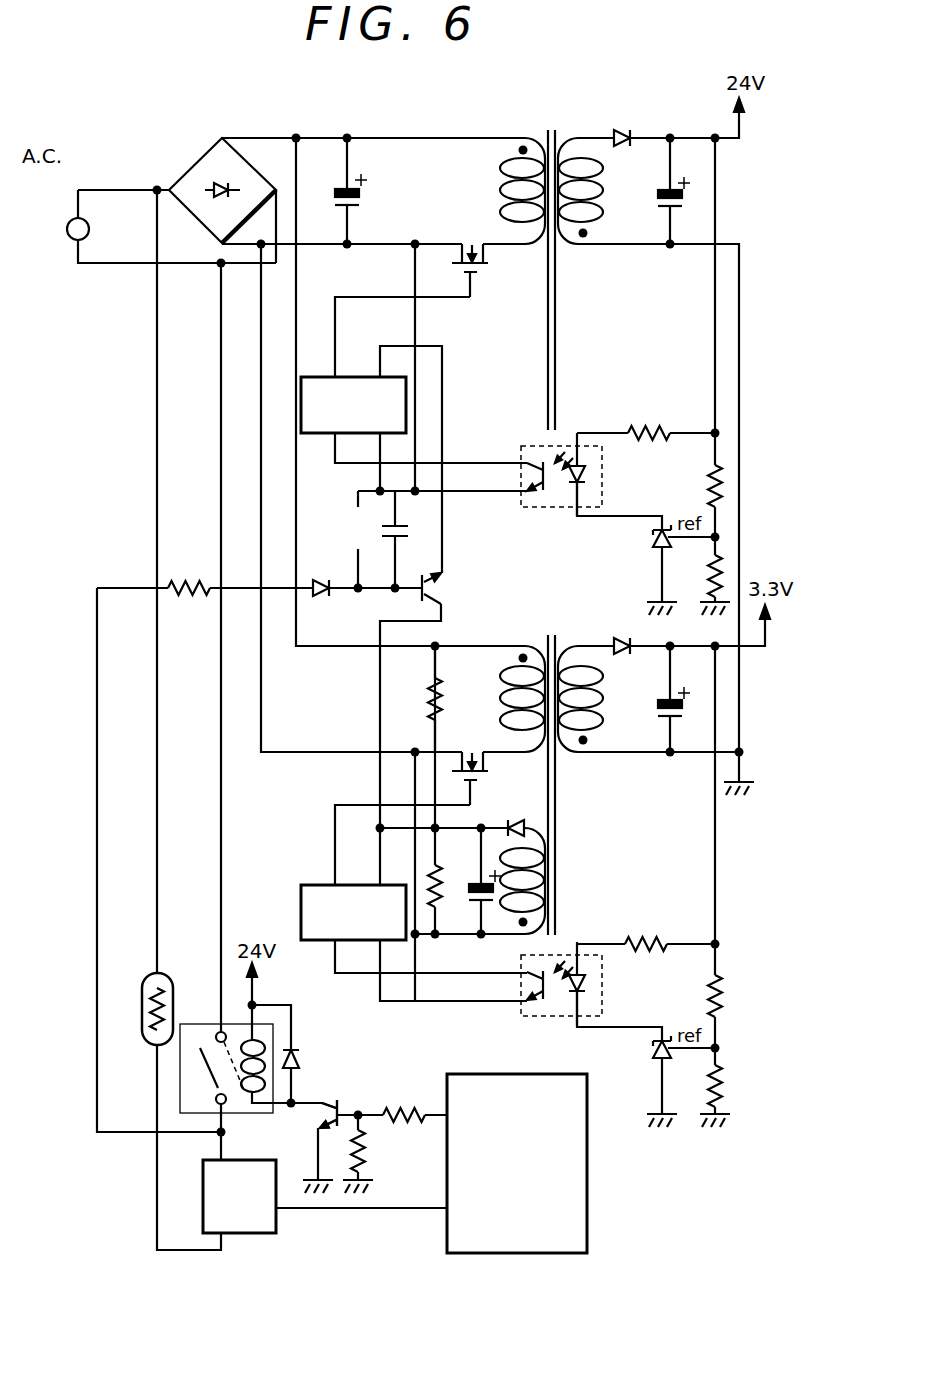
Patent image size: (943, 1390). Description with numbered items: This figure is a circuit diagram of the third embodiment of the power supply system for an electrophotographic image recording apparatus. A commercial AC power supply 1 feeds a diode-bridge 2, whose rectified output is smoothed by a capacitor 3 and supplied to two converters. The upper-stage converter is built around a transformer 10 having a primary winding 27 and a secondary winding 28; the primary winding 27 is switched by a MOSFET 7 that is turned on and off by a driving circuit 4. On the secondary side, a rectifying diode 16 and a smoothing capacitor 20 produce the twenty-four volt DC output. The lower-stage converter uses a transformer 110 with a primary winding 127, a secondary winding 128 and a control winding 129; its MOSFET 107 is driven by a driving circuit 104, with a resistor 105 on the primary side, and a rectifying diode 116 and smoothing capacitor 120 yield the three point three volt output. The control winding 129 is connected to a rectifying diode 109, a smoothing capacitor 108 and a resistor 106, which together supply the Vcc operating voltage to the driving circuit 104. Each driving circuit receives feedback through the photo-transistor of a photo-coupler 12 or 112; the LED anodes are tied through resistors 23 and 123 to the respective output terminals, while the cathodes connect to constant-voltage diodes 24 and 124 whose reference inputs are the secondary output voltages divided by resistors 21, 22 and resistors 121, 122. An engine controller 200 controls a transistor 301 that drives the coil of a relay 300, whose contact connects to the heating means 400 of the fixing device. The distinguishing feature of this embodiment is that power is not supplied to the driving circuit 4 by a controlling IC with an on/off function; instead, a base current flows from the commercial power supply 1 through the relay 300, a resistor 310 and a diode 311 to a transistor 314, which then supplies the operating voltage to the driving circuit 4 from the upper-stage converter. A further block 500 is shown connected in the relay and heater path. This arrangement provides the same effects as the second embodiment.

The commercial AC power supply 1 is at (65, 215).
The diode-bridge 2 is at (192, 162).
The capacitor 3 is at (336, 193).
The driving circuit 4 is at (318, 376).
The MOSFET 7 is at (488, 265).
The transformer 10 is at (551, 130).
The photo-coupler 12 is at (536, 508).
The rectifying diode 16 is at (630, 130).
The smoothing capacitor 20 is at (658, 193).
The resistor 21 is at (708, 478).
The resistor 22 is at (722, 572).
The resistor 23 is at (645, 430).
The constant-voltage diode 24 is at (652, 538).
The primary winding 27 is at (518, 198).
The secondary winding 28 is at (598, 203).
The driving circuit 104 is at (316, 884).
The resistor 105 is at (448, 700).
The resistor 106 is at (453, 880).
The MOSFET 107 is at (484, 784).
The smoothing capacitor 108 is at (468, 896).
The rectifying diode 109 is at (518, 820).
The transformer 110 is at (551, 636).
The photo-coupler 112 is at (536, 1018).
The rectifying diode 116 is at (622, 636).
The smoothing capacitor 120 is at (658, 703).
The resistor 121 is at (708, 990).
The resistor 122 is at (722, 1083).
The resistor 123 is at (645, 941).
The constant-voltage diode 124 is at (652, 1050).
The primary winding 127 is at (518, 705).
The secondary winding 128 is at (598, 712).
The control winding 129 is at (516, 932).
The engine controller 200 is at (580, 1254).
The relay 300 is at (243, 1114).
The transistor 301 is at (343, 1092).
The resistor 310 is at (190, 570).
The diode 311 is at (322, 598).
The transistor 314 is at (440, 588).
The heating means 400 is at (170, 972).
The heater control circuit 500 is at (260, 1234).